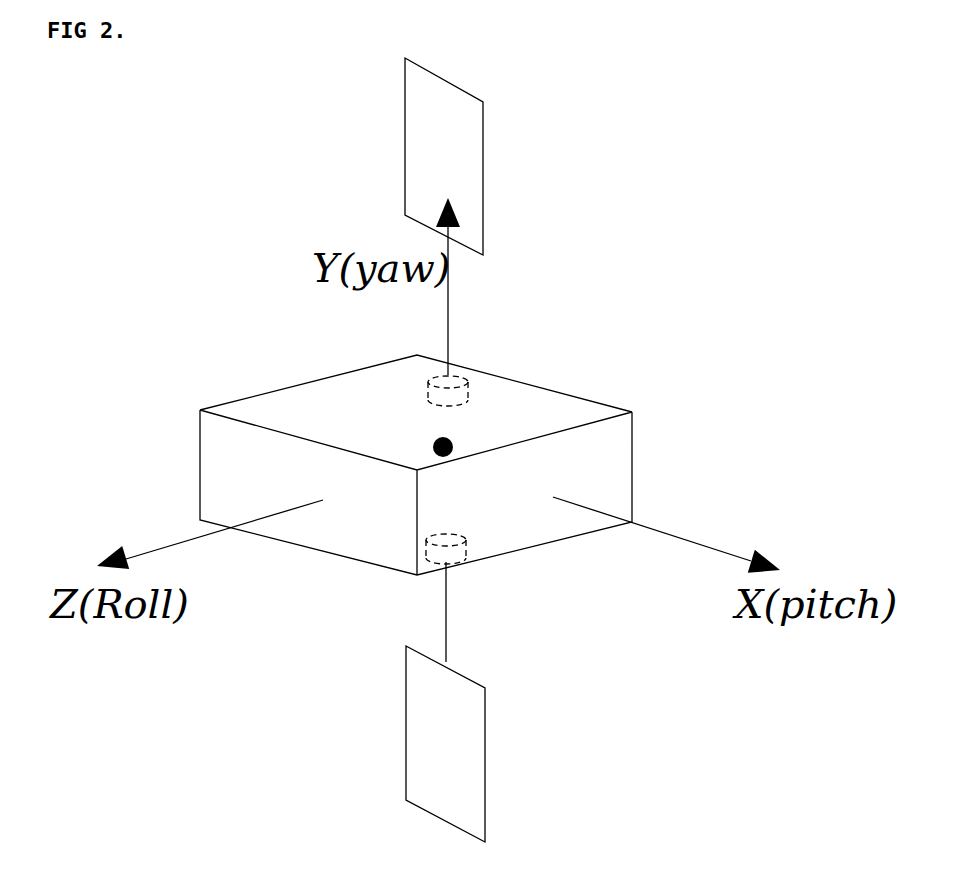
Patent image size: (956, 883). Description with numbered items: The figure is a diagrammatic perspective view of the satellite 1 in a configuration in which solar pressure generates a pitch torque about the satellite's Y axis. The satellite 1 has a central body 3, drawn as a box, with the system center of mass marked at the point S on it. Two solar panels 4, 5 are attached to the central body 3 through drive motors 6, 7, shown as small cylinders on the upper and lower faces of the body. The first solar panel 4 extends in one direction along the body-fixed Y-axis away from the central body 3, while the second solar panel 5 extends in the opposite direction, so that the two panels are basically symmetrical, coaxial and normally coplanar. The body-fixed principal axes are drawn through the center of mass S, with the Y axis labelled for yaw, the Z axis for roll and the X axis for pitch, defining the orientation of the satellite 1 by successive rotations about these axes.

The satellite 1 is at (468, 414).
The central body 3 is at (620, 402).
The solar panel 4 is at (485, 123).
The solar panel 5 is at (487, 833).
The drive motor 6 is at (470, 392).
The drive motor 7 is at (472, 552).